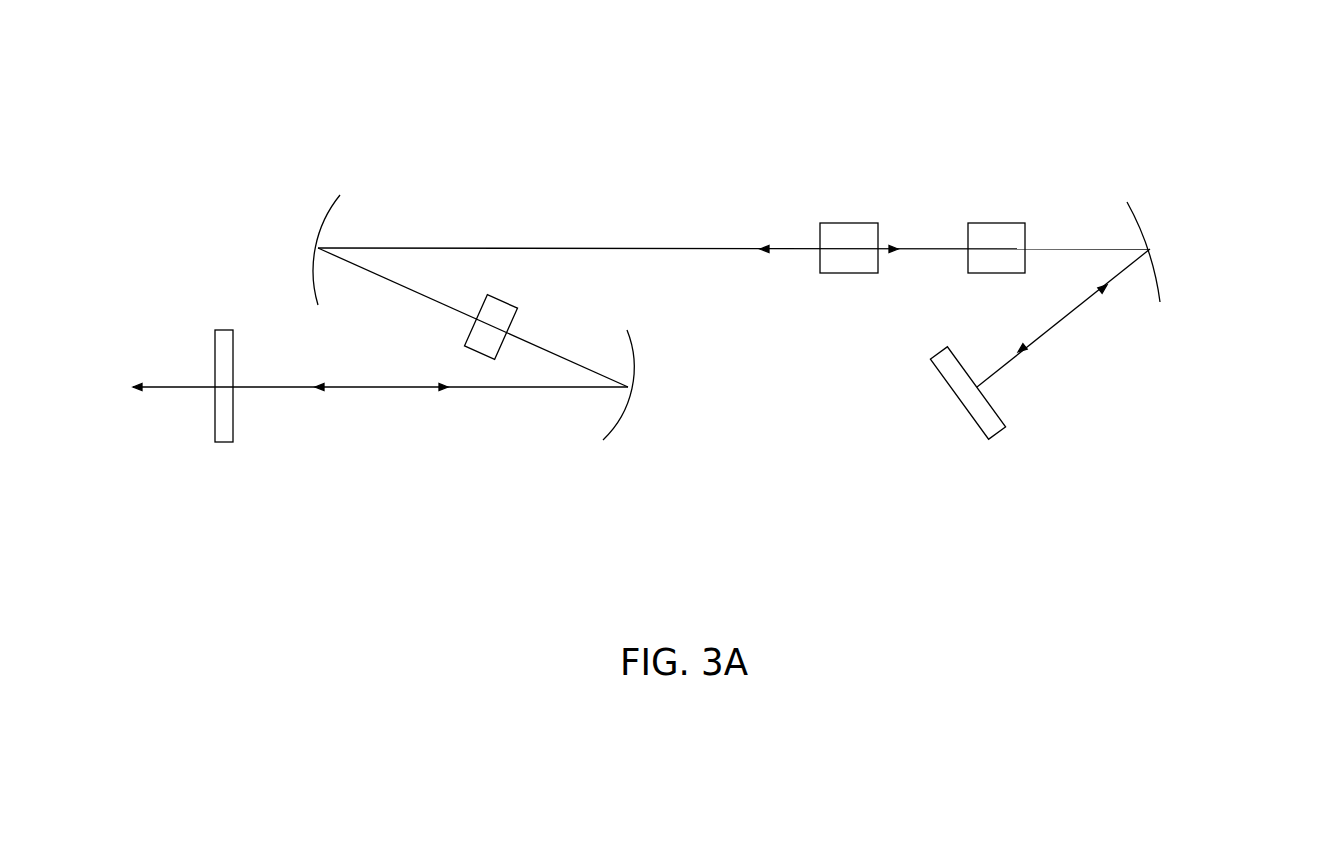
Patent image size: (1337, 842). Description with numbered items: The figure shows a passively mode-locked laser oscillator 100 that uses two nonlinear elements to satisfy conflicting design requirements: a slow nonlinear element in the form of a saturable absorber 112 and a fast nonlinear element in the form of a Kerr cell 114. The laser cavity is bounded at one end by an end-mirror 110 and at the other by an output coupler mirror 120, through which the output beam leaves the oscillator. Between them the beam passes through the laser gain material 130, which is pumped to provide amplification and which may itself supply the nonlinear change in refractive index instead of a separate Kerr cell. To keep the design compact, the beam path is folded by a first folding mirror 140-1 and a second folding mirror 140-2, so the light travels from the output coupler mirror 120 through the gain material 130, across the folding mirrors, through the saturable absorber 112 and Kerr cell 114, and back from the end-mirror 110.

The laser oscillator 100 is at (456, 128).
The end mirror 110 is at (941, 385).
The saturable absorber 112 is at (841, 223).
The Kerr cell 114 is at (1007, 223).
The output coupler mirror 120 is at (233, 420).
The laser gain material 130 is at (517, 300).
The folding mirror 140-1 is at (327, 215).
The folding mirror 140-2 is at (1145, 222).